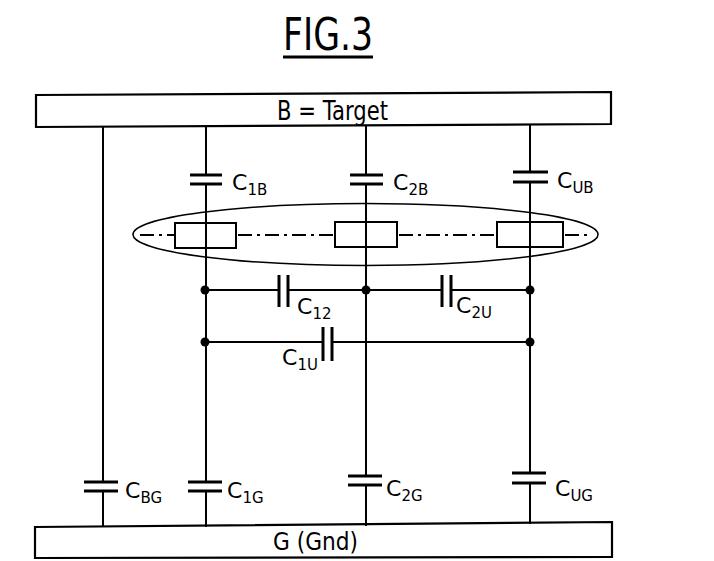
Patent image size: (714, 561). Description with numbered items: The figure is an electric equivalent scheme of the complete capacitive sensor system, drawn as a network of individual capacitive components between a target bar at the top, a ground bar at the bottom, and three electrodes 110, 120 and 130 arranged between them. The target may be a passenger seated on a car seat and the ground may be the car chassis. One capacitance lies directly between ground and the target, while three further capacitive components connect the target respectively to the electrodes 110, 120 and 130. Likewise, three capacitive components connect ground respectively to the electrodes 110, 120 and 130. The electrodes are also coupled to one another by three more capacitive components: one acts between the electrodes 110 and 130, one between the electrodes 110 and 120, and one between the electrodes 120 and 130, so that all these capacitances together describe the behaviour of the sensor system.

The electrode 110 is at (205, 235).
The electrode 120 is at (366, 234).
The electrode 130 is at (530, 234).